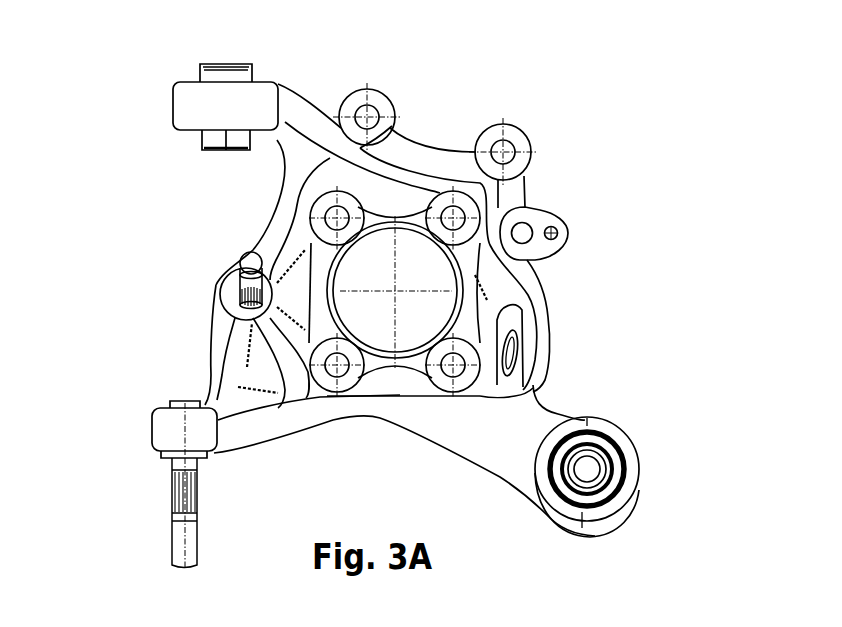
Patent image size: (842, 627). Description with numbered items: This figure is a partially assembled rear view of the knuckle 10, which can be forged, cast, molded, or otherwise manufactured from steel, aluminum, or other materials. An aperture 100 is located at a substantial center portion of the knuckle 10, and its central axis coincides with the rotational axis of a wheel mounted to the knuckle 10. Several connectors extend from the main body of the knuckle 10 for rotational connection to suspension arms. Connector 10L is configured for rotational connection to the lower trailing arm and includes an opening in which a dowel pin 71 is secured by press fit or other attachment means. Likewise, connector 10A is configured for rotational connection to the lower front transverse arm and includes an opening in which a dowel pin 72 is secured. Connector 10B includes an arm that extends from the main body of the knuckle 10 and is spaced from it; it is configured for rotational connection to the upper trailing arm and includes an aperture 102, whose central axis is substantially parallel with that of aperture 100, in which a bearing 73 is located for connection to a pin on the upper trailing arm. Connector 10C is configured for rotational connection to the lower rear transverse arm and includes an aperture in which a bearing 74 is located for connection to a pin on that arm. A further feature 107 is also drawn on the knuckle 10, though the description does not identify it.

The knuckle 10 is at (683, 189).
The connector 10A is at (173, 427).
The connector 10B is at (627, 443).
The connector 10C is at (183, 102).
The connector 10L is at (238, 297).
The dowel pin 71 is at (240, 262).
The dowel pin 72 is at (173, 535).
The bearing 73 is at (568, 465).
The bearing 74 is at (250, 63).
The aperture 100 is at (470, 300).
The aperture 102 is at (615, 496).
The slot / sensor opening 107 is at (514, 333).